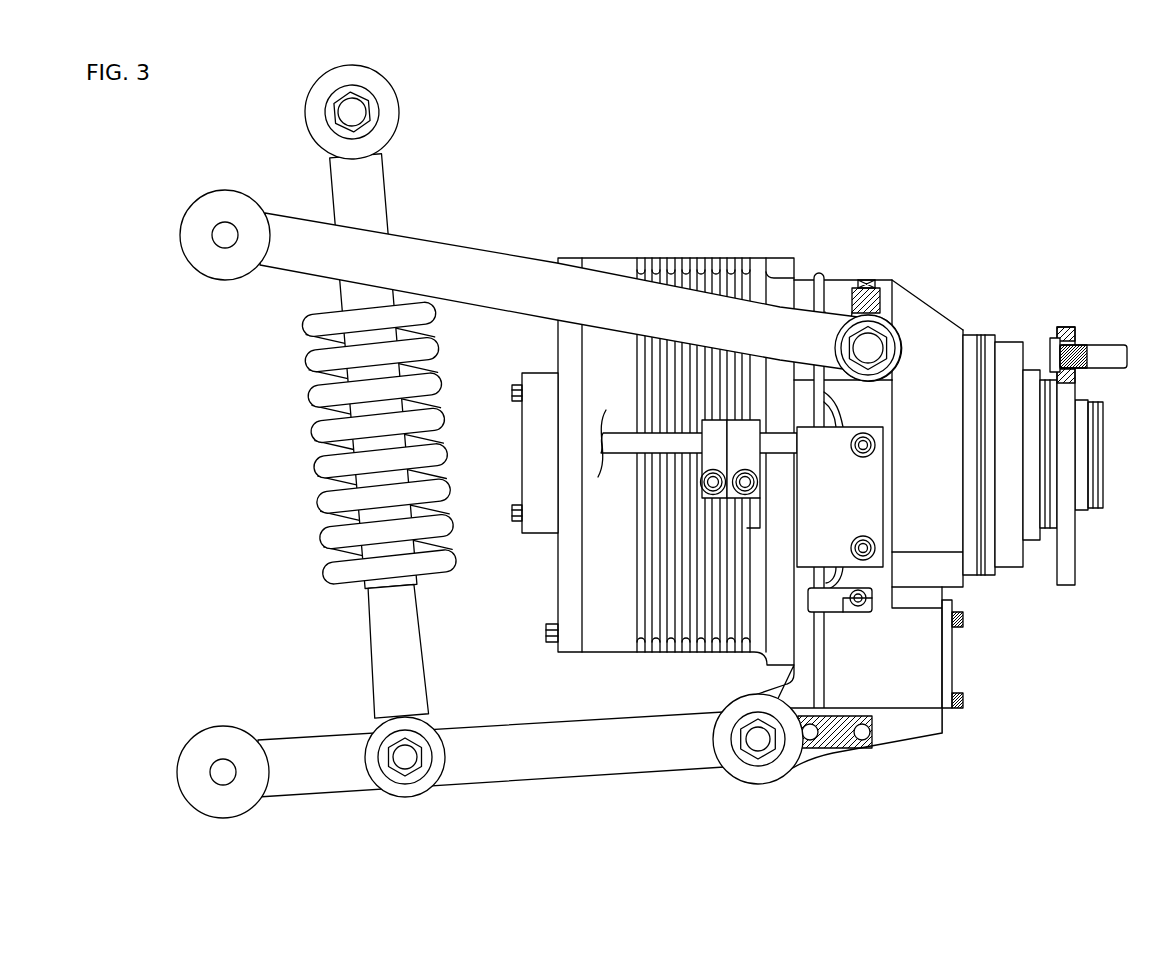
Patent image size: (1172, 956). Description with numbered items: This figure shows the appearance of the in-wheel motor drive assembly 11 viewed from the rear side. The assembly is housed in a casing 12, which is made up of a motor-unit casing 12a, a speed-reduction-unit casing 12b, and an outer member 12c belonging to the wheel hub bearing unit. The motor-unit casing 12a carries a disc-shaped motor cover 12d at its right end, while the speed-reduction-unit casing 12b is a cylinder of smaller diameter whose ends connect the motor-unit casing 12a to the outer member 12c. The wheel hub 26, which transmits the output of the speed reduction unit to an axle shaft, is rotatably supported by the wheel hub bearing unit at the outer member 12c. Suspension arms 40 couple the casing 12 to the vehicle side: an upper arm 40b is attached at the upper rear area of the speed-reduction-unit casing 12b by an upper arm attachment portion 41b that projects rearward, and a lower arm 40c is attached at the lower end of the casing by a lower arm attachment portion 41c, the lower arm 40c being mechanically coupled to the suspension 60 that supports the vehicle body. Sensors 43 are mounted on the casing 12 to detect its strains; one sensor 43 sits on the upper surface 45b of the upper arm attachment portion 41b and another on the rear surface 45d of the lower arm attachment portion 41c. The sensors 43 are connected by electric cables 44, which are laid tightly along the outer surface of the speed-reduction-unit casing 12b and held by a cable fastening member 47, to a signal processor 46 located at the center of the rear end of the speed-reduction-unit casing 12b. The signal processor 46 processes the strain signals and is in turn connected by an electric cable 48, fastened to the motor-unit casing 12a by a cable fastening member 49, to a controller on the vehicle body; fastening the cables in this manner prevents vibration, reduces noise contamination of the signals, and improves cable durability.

The in-wheel motor drive assembly 11 is at (1098, 152).
The casing 12 is at (980, 182).
The motor-unit casing 12a is at (715, 257).
The speed-reduction-unit casing 12b is at (838, 280).
The outer member 12c is at (1010, 342).
The motor cover 12d is at (557, 587).
The wheel hub 26 is at (1065, 561).
The suspension arms 40 is at (521, 245).
The upper arm 40b is at (458, 270).
The lower arm 40c is at (528, 768).
The upper arm attachment portion 41b is at (903, 319).
The lower arm attachment portion 41c is at (812, 760).
The sensor 43 is at (865, 283).
The electric cable 44 is at (821, 273).
The upper surface 45b is at (885, 307).
The rear surface 45d is at (905, 723).
The signal processor 46 is at (848, 502).
The cable fastening member 47 is at (843, 606).
The electric cable 48 is at (620, 447).
The cable fastening member 49 is at (715, 443).
The suspension 60 is at (296, 428).